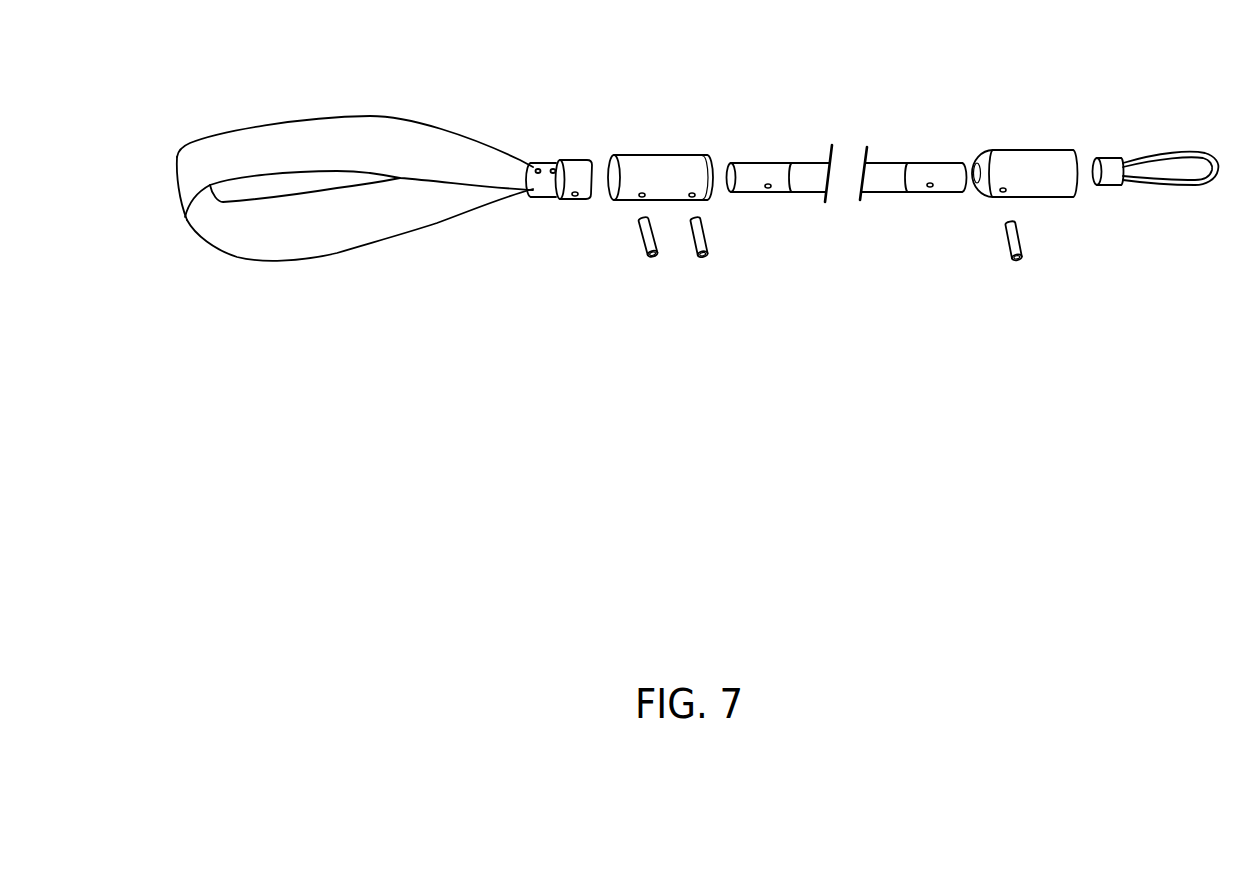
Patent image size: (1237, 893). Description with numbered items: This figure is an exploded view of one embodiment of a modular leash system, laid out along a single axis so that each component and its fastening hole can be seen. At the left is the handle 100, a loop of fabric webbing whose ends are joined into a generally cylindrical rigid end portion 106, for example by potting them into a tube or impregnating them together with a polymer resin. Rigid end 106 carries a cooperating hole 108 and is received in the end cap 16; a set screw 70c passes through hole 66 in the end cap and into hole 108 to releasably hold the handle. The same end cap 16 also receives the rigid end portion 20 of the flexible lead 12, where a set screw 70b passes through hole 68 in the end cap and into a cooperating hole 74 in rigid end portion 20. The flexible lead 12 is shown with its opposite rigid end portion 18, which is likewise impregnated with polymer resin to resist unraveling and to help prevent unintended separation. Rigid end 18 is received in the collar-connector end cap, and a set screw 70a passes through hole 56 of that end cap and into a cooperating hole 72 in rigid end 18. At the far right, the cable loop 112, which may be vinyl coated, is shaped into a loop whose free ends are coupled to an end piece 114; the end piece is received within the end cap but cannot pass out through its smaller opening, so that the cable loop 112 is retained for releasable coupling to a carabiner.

The handle 100 is at (478, 163).
The rigid end portion 106 is at (576, 179).
The cooperating hole 108 is at (574, 197).
The end cap 16 is at (680, 179).
The hole 66 is at (641, 199).
The hole 68 is at (693, 198).
The set screw 70a is at (1014, 262).
The set screw 70b is at (702, 260).
The set screw 70c is at (648, 260).
The flexible lead 12 is at (857, 179).
The rigid end portion 20 is at (780, 179).
The rigid end portion 18 is at (923, 179).
The cooperating hole 74 is at (769, 190).
The cooperating hole 72 is at (931, 190).
The end piece 114 is at (1061, 179).
The hole 56 is at (1002, 194).
The cable loop 112 is at (1168, 152).